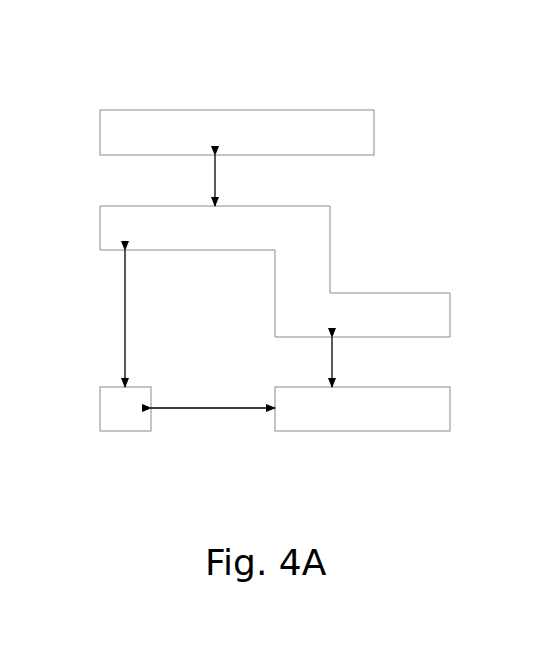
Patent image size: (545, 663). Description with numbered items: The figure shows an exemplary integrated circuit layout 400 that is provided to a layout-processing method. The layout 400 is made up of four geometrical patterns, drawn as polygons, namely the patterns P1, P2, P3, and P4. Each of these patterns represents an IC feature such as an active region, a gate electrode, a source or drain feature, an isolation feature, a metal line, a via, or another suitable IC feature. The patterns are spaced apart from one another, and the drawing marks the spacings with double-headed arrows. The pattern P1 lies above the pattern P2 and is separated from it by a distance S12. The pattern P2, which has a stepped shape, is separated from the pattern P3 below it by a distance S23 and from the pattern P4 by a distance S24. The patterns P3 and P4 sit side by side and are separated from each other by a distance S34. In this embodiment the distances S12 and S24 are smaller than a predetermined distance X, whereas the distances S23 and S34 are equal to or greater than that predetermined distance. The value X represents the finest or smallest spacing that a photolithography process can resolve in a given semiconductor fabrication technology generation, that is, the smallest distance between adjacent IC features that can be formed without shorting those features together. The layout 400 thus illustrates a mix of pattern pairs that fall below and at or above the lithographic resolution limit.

The layout 400 is at (433, 55).
The pattern P1 is at (220, 132).
The pattern P2 is at (258, 271).
The pattern P3 is at (109, 409).
The pattern P4 is at (380, 409).
The distance S12 is at (190, 180).
The distance S23 is at (148, 318).
The distance S24 is at (356, 362).
The distance S34 is at (213, 426).